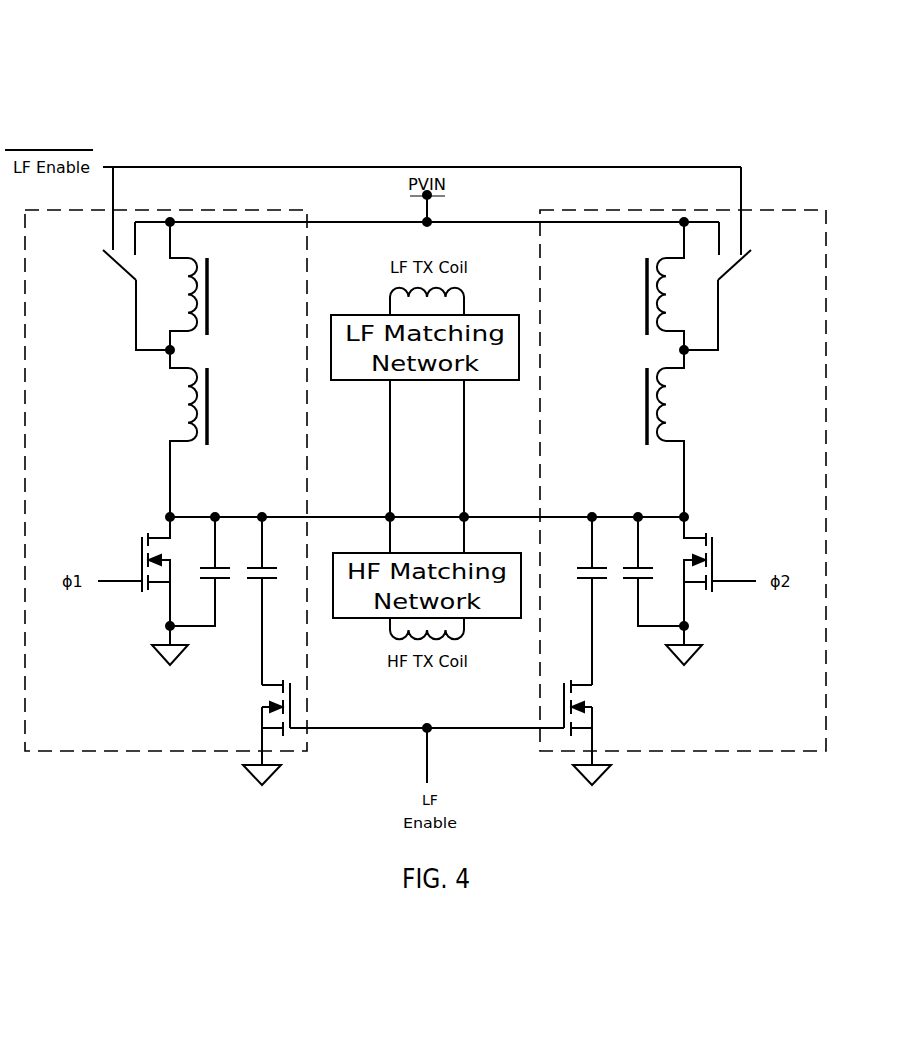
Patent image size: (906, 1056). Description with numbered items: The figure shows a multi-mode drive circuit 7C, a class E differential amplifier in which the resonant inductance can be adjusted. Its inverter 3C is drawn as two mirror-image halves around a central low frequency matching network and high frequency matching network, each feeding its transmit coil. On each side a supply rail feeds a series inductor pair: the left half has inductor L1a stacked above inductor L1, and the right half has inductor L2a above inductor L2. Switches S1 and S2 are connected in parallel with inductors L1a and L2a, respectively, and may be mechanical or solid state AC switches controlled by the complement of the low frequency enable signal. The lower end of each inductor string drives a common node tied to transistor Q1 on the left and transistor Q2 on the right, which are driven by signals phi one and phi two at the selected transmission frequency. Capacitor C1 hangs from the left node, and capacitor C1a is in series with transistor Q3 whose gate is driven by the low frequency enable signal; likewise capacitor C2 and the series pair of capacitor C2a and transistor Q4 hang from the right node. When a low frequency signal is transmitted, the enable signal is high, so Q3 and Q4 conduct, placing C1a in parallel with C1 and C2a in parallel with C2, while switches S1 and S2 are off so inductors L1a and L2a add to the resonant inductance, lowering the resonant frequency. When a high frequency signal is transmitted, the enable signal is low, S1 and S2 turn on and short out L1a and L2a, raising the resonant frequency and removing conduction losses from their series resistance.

The multi-mode drive circuit 7C is at (93, 64).
The inverter 3C is at (68, 249).
The switch S1 is at (132, 286).
The switch S2 is at (720, 286).
The inductor L1a is at (210, 286).
The inductor L1 is at (207, 433).
The inductor L2a is at (649, 286).
The inductor L2 is at (648, 433).
The transistor Q1 is at (149, 591).
The transistor Q2 is at (711, 591).
The transistor Q3 is at (261, 730).
The transistor Q4 is at (592, 729).
The capacitor C1 is at (205, 571).
The capacitor C1a is at (275, 601).
The capacitor C2 is at (653, 571).
The capacitor C2a is at (602, 601).